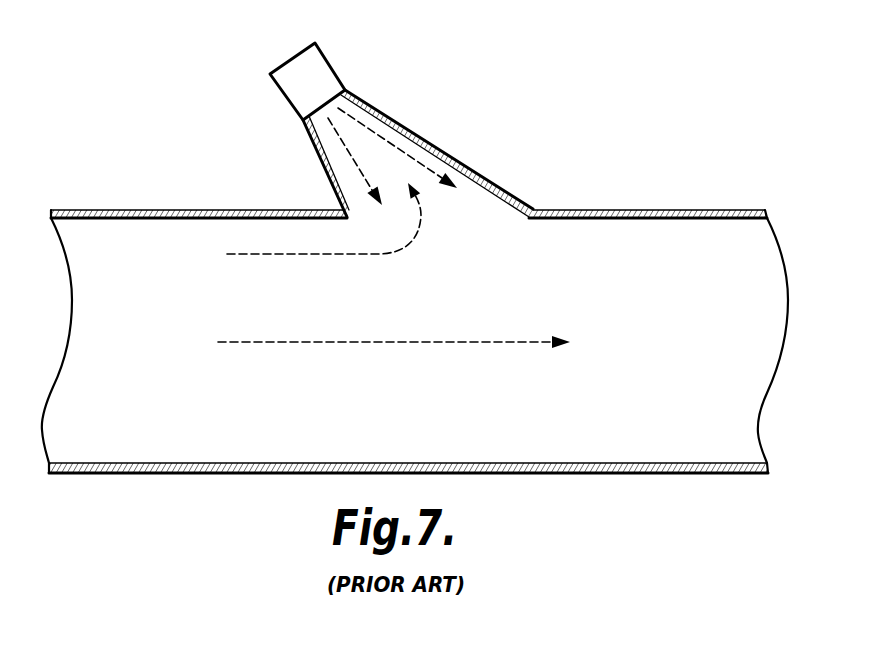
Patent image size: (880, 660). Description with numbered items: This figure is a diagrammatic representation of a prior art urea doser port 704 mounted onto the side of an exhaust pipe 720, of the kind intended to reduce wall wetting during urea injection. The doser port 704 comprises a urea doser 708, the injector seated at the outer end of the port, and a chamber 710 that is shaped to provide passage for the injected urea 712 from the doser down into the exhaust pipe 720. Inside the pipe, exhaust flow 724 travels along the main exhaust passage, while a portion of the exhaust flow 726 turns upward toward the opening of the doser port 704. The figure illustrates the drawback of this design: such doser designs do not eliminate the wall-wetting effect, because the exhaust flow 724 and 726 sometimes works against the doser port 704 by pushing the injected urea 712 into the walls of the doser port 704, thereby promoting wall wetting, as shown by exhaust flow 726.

The doser port 704 is at (412, 124).
The urea doser 708 is at (327, 67).
The chamber 710 is at (410, 162).
The injected urea 712 is at (387, 140).
The exhaust pipe 720 is at (172, 212).
The exhaust flow 724 is at (340, 342).
The exhaust flow 726 is at (406, 242).